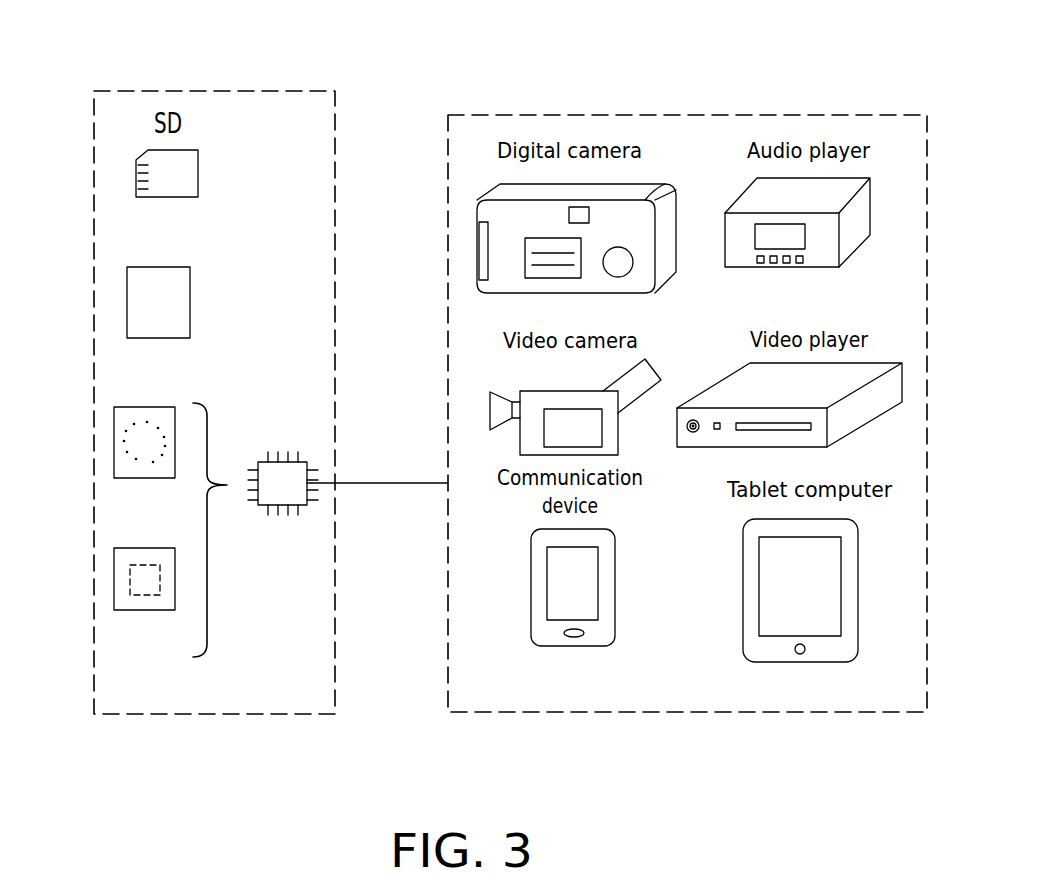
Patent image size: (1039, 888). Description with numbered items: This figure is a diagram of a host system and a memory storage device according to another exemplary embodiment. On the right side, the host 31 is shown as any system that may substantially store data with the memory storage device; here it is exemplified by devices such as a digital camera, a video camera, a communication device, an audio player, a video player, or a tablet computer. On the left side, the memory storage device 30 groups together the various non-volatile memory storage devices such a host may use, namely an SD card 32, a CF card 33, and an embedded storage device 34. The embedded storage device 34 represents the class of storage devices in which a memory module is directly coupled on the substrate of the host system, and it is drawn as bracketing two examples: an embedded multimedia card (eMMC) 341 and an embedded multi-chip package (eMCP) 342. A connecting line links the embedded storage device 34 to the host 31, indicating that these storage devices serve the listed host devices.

The memory storage device 30 is at (205, 91).
The host 31 is at (612, 115).
The SD card 32 is at (136, 181).
The CF card 33 is at (127, 305).
The embedded storage device 34 is at (283, 462).
The embedded multimedia card (eMMC) 341 is at (114, 445).
The embedded multi-chip package (eMCP) 342 is at (114, 581).